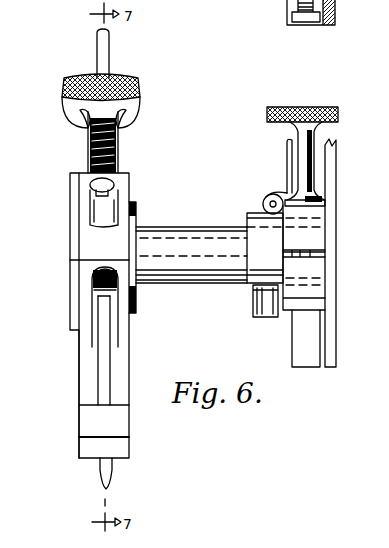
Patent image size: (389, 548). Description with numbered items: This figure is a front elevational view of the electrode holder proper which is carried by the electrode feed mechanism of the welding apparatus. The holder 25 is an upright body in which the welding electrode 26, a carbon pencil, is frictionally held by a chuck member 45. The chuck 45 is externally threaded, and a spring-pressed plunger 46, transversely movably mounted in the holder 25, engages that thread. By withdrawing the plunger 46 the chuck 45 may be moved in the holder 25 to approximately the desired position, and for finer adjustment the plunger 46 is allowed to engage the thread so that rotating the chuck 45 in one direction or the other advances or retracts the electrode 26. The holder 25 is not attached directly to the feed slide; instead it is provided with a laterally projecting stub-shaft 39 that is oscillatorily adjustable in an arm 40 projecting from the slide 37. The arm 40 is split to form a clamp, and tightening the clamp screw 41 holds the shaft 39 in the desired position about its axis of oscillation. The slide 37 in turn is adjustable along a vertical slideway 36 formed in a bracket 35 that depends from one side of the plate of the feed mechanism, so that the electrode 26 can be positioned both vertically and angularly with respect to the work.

The welding electrode 26 is at (96, 56).
The electrode holder 25 is at (72, 302).
The spring-pressed plunger 46 is at (90, 205).
The chuck member 45 is at (99, 300).
The stub-shaft 39 is at (178, 232).
The clamp screw 41 is at (302, 162).
The vertical slideway 36 is at (327, 323).
The slide 37 is at (325, 200).
The arm 40 is at (318, 236).
The bracket 35 is at (295, 345).